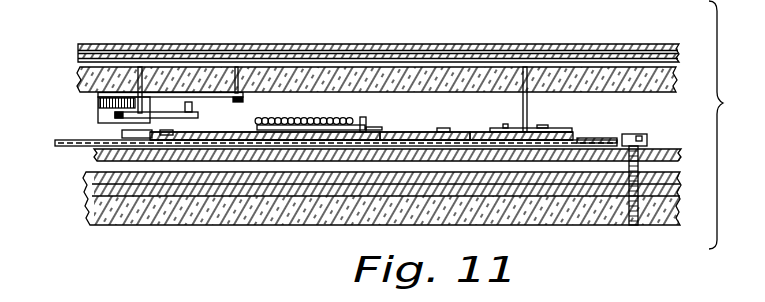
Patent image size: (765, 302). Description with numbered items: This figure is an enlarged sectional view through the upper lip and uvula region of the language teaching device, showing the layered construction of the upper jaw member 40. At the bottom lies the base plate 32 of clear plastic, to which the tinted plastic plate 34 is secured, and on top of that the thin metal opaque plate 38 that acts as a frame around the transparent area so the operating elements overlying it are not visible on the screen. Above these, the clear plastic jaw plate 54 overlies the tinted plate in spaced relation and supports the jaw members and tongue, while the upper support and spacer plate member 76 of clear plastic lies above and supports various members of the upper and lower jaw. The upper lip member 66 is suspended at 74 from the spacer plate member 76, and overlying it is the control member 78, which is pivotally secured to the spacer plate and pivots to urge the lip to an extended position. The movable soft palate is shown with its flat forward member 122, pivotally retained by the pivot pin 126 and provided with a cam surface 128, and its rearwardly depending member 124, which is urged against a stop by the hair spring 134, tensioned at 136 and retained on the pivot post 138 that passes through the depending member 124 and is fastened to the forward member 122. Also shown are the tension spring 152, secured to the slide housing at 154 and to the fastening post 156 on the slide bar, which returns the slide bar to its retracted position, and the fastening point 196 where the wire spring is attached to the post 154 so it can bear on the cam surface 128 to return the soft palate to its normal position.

The upper support and spacer plate member 76 is at (210, 67).
The control member 78 is at (177, 97).
The suspension point 74 is at (137, 80).
The upper lip member 66 is at (115, 115).
The securing point on slide housing 154 is at (262, 119).
The fastening point of wire spring 196 is at (302, 119).
The tension spring 152 is at (326, 119).
The fastening post 156 is at (352, 120).
The pivot pin 126 is at (366, 119).
The cam surface 128 is at (412, 133).
The flat forward member 122 is at (480, 132).
The hair spring 134 is at (526, 90).
The rearwardly depending member 124 is at (570, 128).
The tensioning point 136 is at (514, 117).
The pivot post 138 is at (539, 127).
The clear plastic jaw plate 54 is at (352, 143).
The upper jaw member 40 is at (598, 135).
The base plate 32 is at (235, 162).
The tinted plastic plate 34 is at (162, 182).
The thin metal opaque plate 38 is at (96, 174).